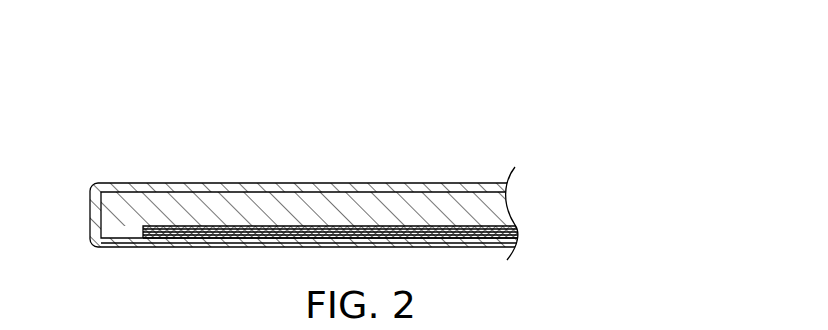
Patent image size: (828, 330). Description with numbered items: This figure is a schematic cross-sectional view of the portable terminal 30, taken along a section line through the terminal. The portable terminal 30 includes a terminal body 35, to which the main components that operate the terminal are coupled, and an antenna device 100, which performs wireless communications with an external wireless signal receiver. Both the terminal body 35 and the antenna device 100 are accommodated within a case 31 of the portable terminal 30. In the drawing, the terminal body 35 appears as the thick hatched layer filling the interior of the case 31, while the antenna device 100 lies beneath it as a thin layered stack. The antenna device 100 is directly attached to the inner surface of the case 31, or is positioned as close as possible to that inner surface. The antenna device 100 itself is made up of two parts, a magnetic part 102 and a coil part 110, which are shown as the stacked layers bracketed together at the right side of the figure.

The portable terminal 30 is at (348, 85).
The case 31 is at (333, 183).
The terminal body 35 is at (425, 195).
The antenna device 100 is at (356, 219).
The magnetic part 102 is at (517, 228).
The coil part 110 is at (516, 237).